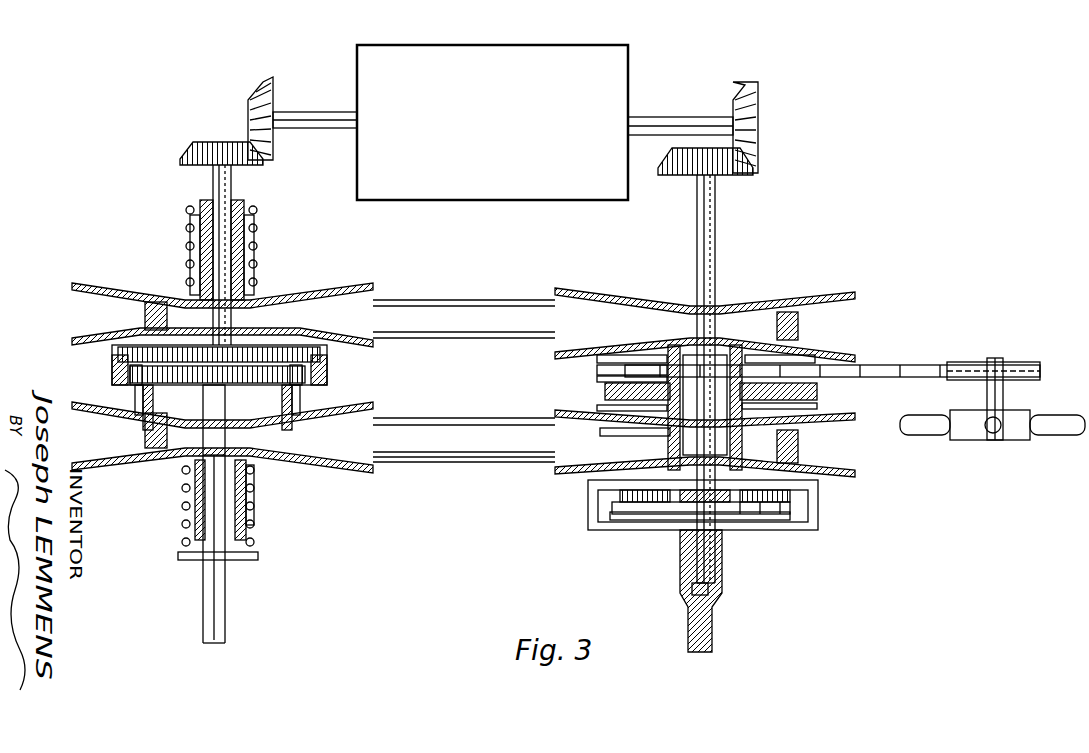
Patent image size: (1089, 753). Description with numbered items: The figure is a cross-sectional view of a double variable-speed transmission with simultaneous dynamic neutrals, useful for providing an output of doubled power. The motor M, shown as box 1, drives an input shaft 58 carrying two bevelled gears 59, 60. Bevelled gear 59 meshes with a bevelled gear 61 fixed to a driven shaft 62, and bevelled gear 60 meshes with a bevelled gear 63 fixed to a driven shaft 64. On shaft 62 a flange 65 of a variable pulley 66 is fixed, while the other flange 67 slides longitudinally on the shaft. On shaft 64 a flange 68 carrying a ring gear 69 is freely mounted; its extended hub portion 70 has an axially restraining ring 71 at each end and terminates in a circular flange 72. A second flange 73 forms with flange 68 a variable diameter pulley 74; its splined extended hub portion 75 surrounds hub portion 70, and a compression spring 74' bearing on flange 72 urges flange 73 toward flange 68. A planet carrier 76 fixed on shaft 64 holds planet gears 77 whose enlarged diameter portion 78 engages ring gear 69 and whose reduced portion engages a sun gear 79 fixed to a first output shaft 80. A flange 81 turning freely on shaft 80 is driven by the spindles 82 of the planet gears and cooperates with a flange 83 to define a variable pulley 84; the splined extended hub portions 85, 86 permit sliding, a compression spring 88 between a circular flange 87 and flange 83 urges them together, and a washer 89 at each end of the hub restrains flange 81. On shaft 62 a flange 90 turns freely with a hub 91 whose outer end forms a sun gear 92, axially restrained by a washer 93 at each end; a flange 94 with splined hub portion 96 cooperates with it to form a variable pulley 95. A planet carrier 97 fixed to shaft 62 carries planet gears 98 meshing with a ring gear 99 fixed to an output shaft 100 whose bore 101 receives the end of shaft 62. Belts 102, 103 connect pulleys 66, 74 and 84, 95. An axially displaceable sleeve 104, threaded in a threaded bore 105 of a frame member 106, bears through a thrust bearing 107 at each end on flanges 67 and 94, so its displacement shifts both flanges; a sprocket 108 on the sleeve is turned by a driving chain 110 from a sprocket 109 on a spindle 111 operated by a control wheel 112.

The motor 1 is at (600, 75).
The input shaft 58 is at (313, 114).
The bevelled gear 59 is at (740, 90).
The bevelled gear 60 is at (262, 78).
The bevelled gear 61 is at (745, 178).
The driven shaft 62 is at (716, 228).
The bevelled gear 63 is at (195, 145).
The driven shaft 64 is at (218, 185).
The flange 65 is at (625, 292).
The variable pulley 66 is at (874, 306).
The flange 67 is at (865, 355).
The flange 68 is at (120, 338).
The ring gear 69 is at (125, 375).
The extended hub portion 70 is at (256, 240).
The axially restraining ring 71 is at (244, 205).
The circular flange 72 is at (186, 210).
The second flange 73 is at (150, 284).
The variable diameter pulley 74 is at (106, 308).
The compression spring 74' is at (257, 255).
The extended hub portion 75 is at (186, 232).
The planet carrier 76 is at (318, 342).
The planet gears 77 is at (133, 392).
The enlarged diameter portion 78 is at (110, 360).
The sun gear 79 is at (292, 400).
The first output shaft 80 is at (226, 605).
The flange 81 is at (128, 415).
The spindles 82 is at (155, 400).
The flange 83 is at (150, 465).
The variable pulley 84 is at (132, 438).
The extended hub portion 85 is at (255, 490).
The extended hub portion 86 is at (256, 520).
The circular flange 87 is at (258, 553).
The compression spring 88 is at (183, 522).
The washer 89 is at (232, 428).
The flange 90 is at (825, 482).
The hub 91 is at (720, 445).
The sun gear 92 is at (600, 482).
The washer 93 is at (820, 388).
The flange 94 is at (820, 425).
The variable pulley 95 is at (820, 455).
The hub portion 96 is at (680, 440).
The planet carrier 97 is at (650, 520).
The planet gears 98 is at (600, 520).
The ring gear 99 is at (810, 498).
The output shaft 100 is at (722, 632).
The bore 101 is at (718, 592).
The belt 102 is at (455, 325).
The belt 103 is at (457, 452).
The axially displaceable sleeve 104 is at (820, 405).
The threaded bore 105 is at (610, 385).
The frame member 106 is at (590, 395).
The thrust bearing 107 is at (600, 333).
The sprocket 108 is at (600, 350).
The sprocket 109 is at (1030, 360).
The driving chain 110 is at (885, 365).
The spindle 111 is at (1003, 400).
The control wheel 112 is at (1005, 440).